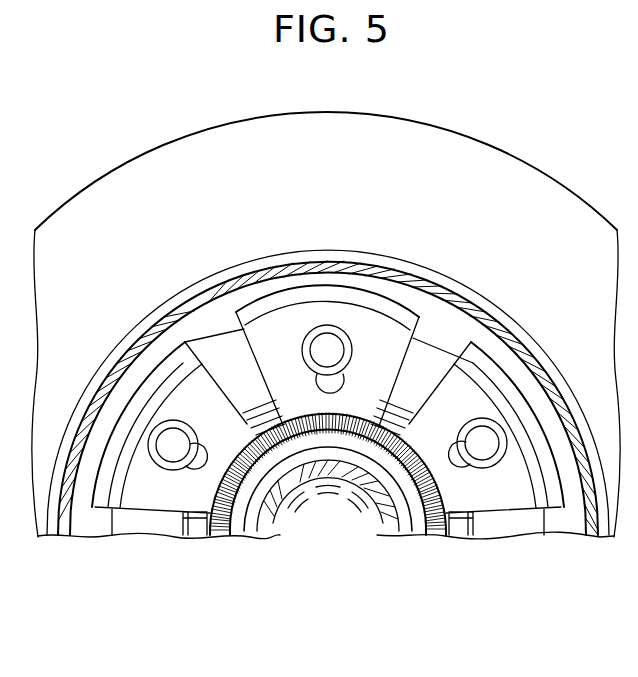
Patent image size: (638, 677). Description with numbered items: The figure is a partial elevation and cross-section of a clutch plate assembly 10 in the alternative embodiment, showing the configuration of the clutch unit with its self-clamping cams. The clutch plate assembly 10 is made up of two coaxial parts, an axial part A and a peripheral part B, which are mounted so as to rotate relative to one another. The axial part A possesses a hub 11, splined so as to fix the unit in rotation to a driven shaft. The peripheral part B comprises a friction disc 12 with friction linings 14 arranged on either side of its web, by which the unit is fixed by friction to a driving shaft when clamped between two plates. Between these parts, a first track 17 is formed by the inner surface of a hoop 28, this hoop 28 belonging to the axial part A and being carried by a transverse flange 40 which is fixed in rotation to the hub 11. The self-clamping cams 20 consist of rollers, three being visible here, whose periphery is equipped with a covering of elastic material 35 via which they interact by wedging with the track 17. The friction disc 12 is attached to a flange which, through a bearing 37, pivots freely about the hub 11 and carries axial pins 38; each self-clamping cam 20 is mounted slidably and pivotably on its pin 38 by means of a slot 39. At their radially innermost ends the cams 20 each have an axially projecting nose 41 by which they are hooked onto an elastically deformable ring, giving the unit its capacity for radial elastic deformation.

The clutch plate assembly 10 is at (94, 157).
The friction disc 12 is at (520, 156).
The friction linings 14 is at (319, 181).
The first track 17 is at (180, 327).
The self-clamping cam 20 is at (248, 292).
The hoop 28 is at (453, 298).
The covering of elastic material 35 is at (369, 286).
The bearing 37 is at (381, 449).
The pins 38 is at (336, 358).
The slot 39 is at (320, 384).
The transverse flange 40 is at (255, 416).
The nose 41 is at (228, 510).
The hub 11 is at (257, 544).
The axial part A is at (394, 566).
The peripheral part B is at (154, 114).